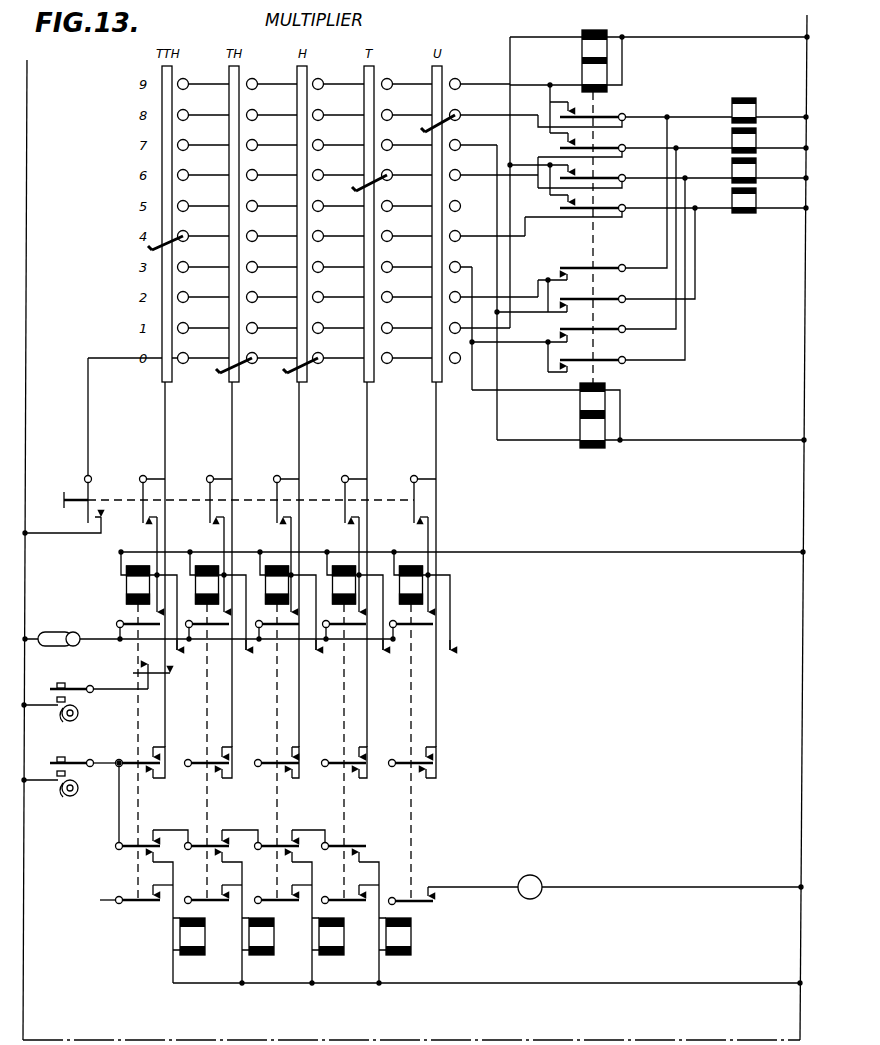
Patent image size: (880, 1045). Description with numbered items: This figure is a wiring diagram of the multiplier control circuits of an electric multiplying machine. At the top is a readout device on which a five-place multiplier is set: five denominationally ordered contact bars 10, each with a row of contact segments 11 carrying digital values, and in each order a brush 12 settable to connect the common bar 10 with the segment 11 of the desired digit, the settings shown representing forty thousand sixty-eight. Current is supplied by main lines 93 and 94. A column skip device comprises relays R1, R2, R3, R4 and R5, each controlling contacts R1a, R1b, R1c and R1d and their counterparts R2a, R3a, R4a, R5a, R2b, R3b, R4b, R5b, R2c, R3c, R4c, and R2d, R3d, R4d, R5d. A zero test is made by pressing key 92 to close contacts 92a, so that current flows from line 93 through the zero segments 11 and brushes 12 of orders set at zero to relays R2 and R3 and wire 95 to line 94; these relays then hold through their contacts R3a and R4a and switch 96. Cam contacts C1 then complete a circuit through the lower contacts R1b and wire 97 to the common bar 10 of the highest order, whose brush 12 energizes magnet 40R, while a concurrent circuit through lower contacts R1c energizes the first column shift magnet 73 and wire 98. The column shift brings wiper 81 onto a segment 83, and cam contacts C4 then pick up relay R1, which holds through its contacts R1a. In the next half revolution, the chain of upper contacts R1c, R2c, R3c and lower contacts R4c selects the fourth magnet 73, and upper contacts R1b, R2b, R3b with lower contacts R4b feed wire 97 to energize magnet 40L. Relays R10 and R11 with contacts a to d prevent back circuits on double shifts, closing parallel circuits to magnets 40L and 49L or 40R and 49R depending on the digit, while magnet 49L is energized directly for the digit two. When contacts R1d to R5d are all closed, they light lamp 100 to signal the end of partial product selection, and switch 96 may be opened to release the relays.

The contact bar 10 is at (463, 69).
The contact segments 11 is at (478, 218).
The brush 12 is at (290, 373).
The main line 93 is at (28, 262).
The main line 94 is at (805, 265).
The wire 97 is at (436, 425).
The key 92 is at (74, 480).
The contacts 92a is at (346, 510).
The wire 95 is at (550, 552).
The switch 96 is at (60, 630).
The wiper 81 is at (144, 663).
The fixed segments 83 is at (368, 672).
The column shift magnet 73 is at (364, 952).
The wire 98 is at (468, 983).
The lamp 100 is at (540, 876).
The relay R10 is at (582, 52).
The relay R11 is at (580, 408).
The magnet 49R is at (750, 110).
The magnet 40L is at (750, 142).
The magnet 49L is at (750, 172).
The magnet 40R is at (750, 202).
The column skip relay R1 is at (142, 565).
The column skip relay R2 is at (211, 565).
The column skip relay R3 is at (281, 565).
The column skip relay R4 is at (348, 565).
The column skip relay R5 is at (415, 565).
The relay contacts R1a is at (149, 619).
The relay contacts R2a is at (222, 619).
The relay contacts R3a is at (290, 619).
The relay contacts R4a is at (358, 619).
The relay contacts R5a is at (426, 619).
The relay contacts R1b is at (145, 753).
The relay contacts R2b is at (216, 753).
The relay contacts R3b is at (286, 753).
The relay contacts R4b is at (353, 753).
The relay contacts R5b is at (420, 753).
The relay contacts R1c is at (168, 822).
The relay contacts R2c is at (238, 822).
The relay contacts R3c is at (296, 836).
The relay contacts R4c is at (364, 845).
The relay contacts R1d is at (148, 888).
The relay contacts R2d is at (220, 888).
The relay contacts R3d is at (288, 888).
The relay contacts R4d is at (356, 888).
The relay contacts R5d is at (436, 898).
The cam contacts C4 is at (50, 694).
The cam contacts C1 is at (50, 768).